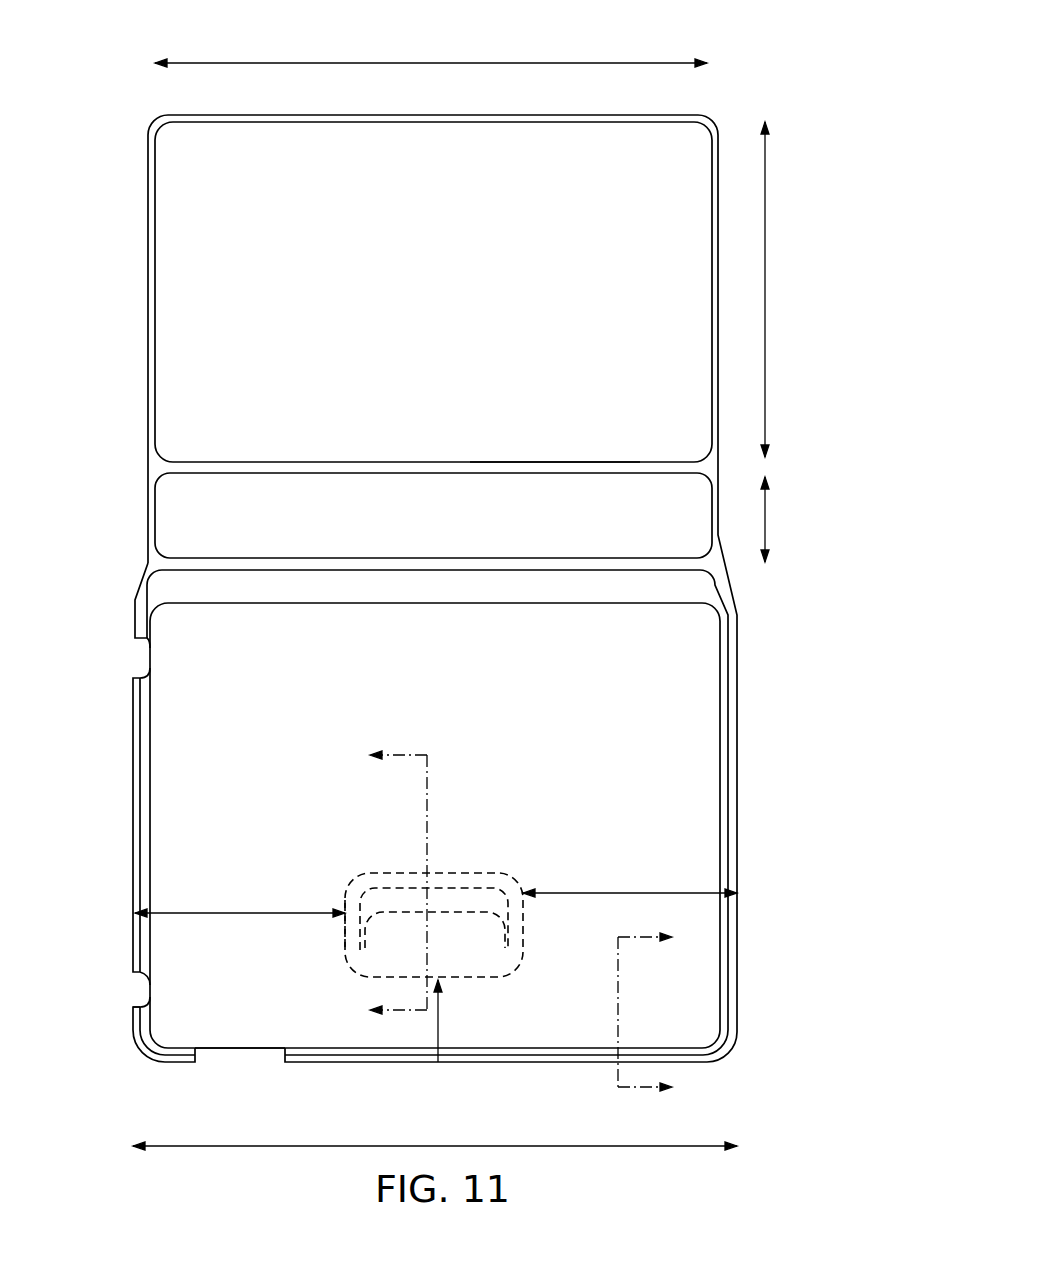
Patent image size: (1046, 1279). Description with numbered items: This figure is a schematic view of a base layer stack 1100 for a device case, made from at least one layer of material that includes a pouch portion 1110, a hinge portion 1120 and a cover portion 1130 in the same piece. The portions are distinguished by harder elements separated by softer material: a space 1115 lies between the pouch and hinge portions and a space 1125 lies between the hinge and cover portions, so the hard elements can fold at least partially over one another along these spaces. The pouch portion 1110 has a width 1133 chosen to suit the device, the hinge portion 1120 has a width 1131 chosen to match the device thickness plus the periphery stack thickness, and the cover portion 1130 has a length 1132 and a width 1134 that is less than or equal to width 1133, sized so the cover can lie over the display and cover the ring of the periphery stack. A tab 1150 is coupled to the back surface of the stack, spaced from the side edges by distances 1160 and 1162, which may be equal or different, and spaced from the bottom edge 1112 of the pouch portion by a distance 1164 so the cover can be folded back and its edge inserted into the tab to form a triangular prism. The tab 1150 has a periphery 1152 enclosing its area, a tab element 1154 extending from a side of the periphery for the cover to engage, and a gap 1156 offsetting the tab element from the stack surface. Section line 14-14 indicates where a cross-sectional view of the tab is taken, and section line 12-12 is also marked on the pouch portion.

The base layer stack 1100 is at (658, 44).
The pouch portion 1110 is at (165, 775).
The bottom edge 1112 is at (298, 1058).
The space 1115 is at (183, 568).
The hinge portion 1120 is at (180, 512).
The space 1125 is at (538, 464).
The cover portion 1130 is at (178, 218).
The width of hinge portion 1131 is at (768, 535).
The length of cover portion 1132 is at (768, 292).
The width of pouch portion 1133 is at (356, 1145).
The width of cover portion 1134 is at (468, 63).
The tab 1150 is at (410, 874).
The periphery 1152 is at (356, 905).
The tab element 1154 is at (462, 930).
The gap 1156 is at (440, 900).
The distance 1160 is at (268, 912).
The distance 1162 is at (705, 892).
The distance 1164 is at (440, 1035).
The section line 12- 12 is at (664, 1012).
The section line 14- 14 is at (385, 883).